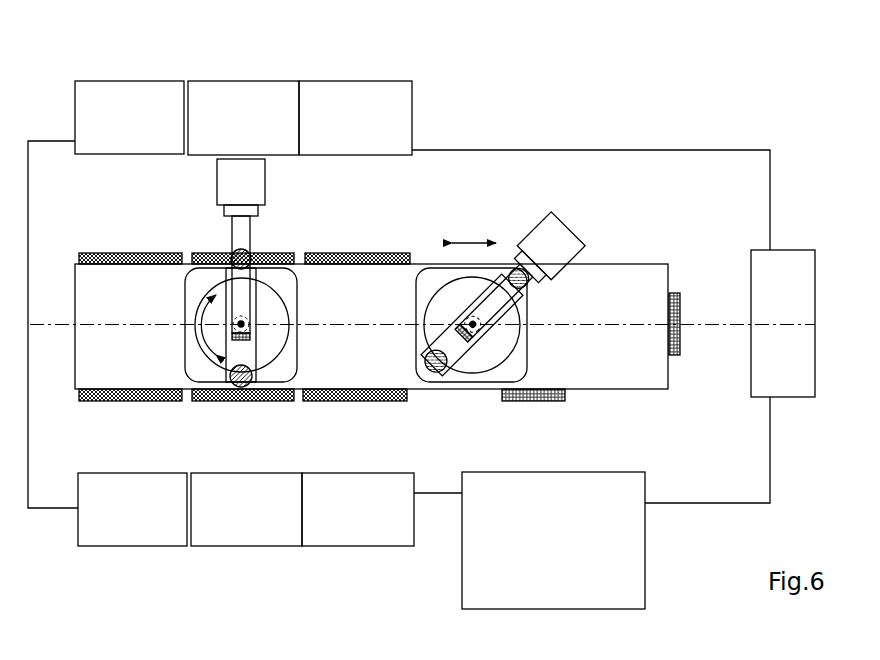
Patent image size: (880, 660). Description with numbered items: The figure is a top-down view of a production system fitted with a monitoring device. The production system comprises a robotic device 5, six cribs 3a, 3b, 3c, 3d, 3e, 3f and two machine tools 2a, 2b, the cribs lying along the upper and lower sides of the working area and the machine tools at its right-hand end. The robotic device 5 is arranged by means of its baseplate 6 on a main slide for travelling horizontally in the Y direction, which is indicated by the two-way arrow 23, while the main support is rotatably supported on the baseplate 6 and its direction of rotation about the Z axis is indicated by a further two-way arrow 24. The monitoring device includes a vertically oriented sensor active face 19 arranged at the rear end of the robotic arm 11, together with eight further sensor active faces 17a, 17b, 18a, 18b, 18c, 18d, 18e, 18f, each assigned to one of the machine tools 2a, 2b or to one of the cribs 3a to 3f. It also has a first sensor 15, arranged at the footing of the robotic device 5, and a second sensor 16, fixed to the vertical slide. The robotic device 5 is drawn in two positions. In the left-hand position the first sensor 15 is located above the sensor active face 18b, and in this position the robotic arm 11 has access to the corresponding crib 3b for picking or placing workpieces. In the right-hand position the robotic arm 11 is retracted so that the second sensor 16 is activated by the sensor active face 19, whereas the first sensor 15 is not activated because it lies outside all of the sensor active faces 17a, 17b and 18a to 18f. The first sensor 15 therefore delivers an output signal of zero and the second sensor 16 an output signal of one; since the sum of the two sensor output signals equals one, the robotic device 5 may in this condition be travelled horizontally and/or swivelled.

The machine tool 2a is at (800, 255).
The machine tool 2b is at (633, 572).
The crib 3a is at (132, 90).
The crib 3b is at (246, 90).
The crib 3c is at (347, 90).
The crib 3d is at (127, 537).
The crib 3e is at (245, 537).
The crib 3f is at (355, 533).
The robotic device 5 is at (172, 341).
The baseplate 6 is at (197, 280).
The robotic arm 11 is at (232, 221).
The first sensor 15 is at (241, 250).
The second sensor 16 is at (254, 378).
The sensor active face 17a is at (681, 332).
The sensor active face 17b is at (533, 405).
The sensor active face 18a is at (122, 253).
The sensor active face 18b is at (292, 253).
The sensor active face 18c is at (358, 253).
The sensor active face 18d is at (141, 402).
The sensor active face 18e is at (256, 402).
The sensor active face 18f is at (364, 402).
The sensor active face 19 is at (251, 337).
The two-way arrow 23 is at (471, 238).
The two-way arrow 24 is at (203, 312).